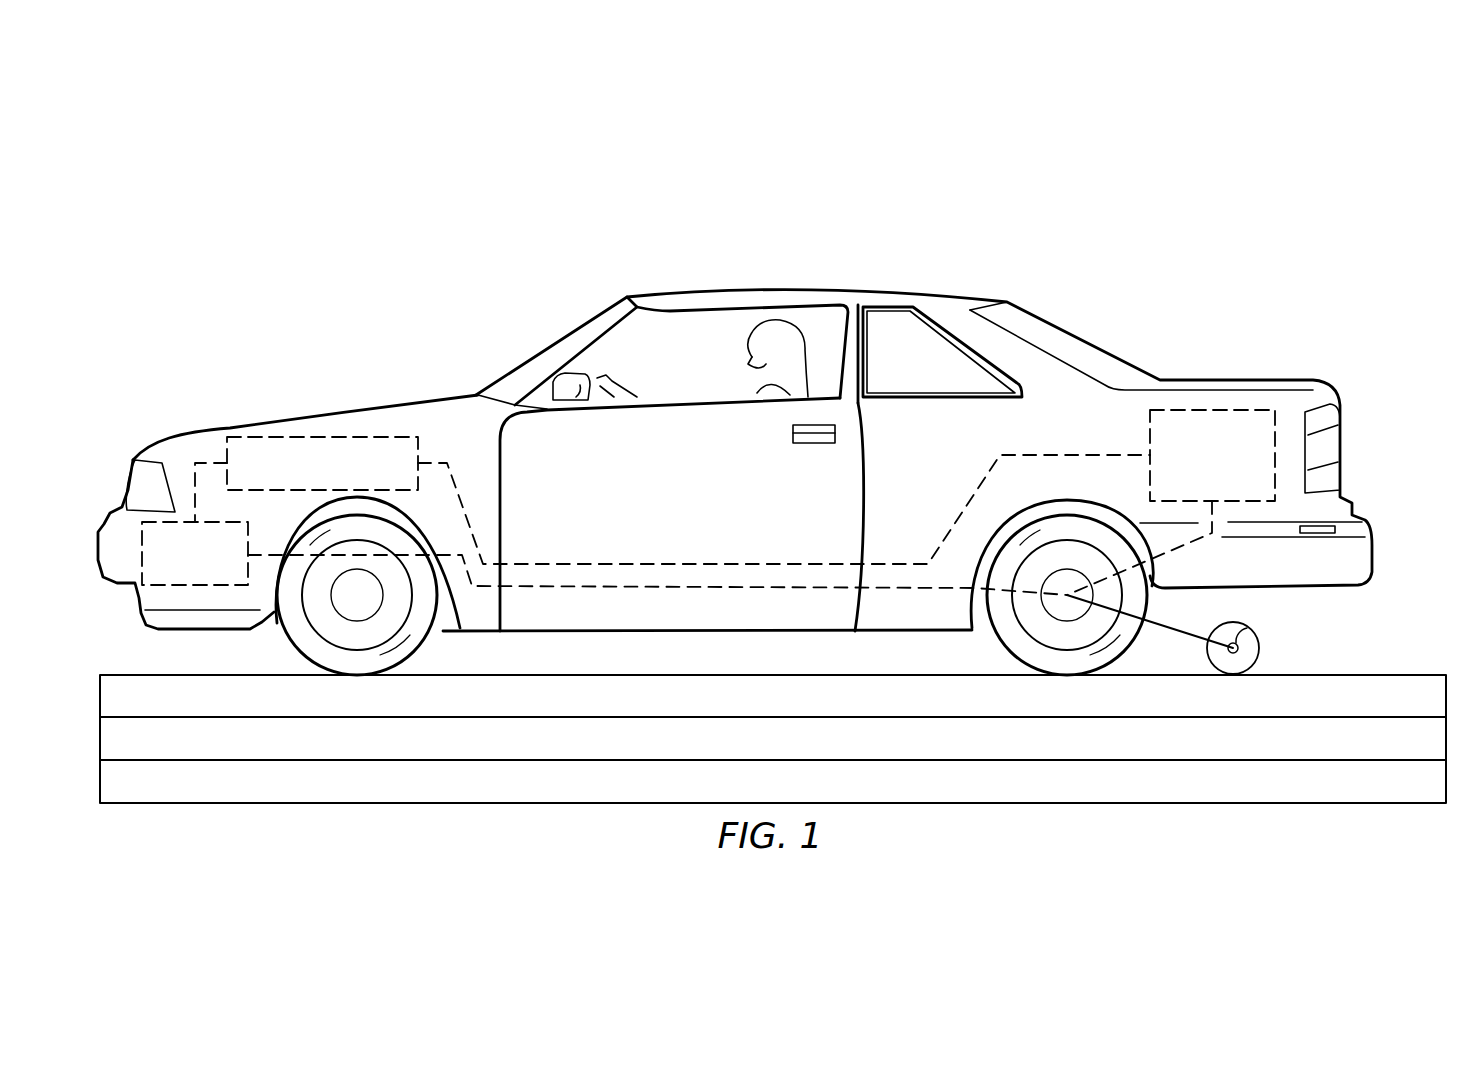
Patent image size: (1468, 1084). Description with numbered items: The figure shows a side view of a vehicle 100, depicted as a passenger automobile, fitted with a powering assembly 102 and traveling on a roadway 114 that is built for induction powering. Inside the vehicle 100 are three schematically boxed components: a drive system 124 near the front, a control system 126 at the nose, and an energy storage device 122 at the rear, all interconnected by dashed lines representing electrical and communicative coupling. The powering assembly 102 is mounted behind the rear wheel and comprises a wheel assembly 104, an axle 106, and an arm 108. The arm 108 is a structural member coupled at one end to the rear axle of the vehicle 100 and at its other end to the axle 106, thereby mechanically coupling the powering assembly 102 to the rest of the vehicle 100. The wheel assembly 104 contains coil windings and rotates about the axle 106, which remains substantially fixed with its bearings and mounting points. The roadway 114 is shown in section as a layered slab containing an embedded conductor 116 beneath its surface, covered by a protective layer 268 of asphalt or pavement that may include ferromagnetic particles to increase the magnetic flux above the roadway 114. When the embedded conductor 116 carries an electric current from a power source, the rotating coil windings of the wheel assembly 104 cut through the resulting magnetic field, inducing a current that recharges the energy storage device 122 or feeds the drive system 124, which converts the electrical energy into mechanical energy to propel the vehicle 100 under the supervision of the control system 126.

The vehicle 100 is at (456, 209).
The powering assembly 102 is at (1302, 639).
The wheel assembly 104 is at (1260, 649).
The axle 106 is at (1248, 628).
The arm 108 is at (1162, 625).
The roadway 114 is at (1383, 703).
The embedded conductor 116 is at (1272, 743).
The energy storage device 122 is at (1212, 410).
The drive system 124 is at (333, 436).
The control system 126 is at (205, 587).
The layer 268 is at (776, 738).